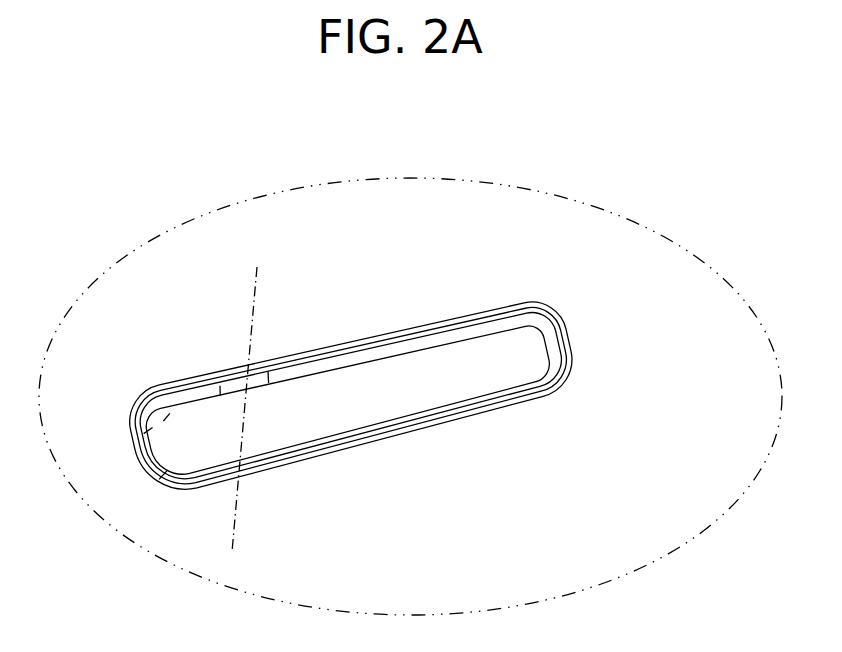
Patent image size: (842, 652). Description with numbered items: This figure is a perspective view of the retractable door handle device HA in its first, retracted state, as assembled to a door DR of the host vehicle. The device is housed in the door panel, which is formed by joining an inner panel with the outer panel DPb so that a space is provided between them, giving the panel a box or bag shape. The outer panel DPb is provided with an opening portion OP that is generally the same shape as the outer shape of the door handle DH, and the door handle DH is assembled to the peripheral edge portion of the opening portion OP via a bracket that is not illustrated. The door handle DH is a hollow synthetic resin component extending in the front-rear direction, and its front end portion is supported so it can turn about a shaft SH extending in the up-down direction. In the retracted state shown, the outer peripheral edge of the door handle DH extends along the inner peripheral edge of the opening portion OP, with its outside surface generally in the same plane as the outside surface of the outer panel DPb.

The door DR is at (452, 176).
The outer panel DPb is at (410, 357).
The shaft SH is at (254, 310).
The retractable door handle device HA is at (396, 361).
The opening portion OP is at (352, 397).
The door handle DH is at (352, 397).